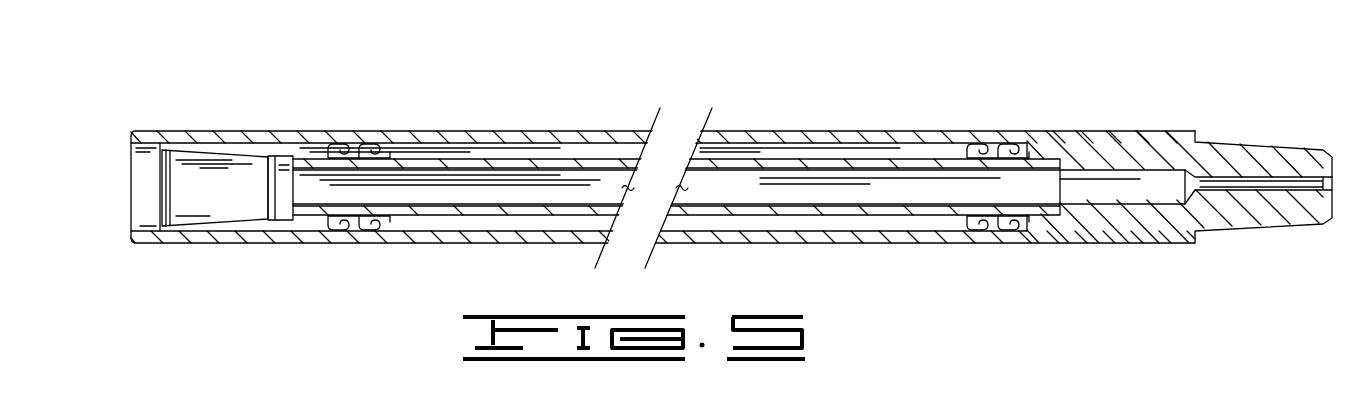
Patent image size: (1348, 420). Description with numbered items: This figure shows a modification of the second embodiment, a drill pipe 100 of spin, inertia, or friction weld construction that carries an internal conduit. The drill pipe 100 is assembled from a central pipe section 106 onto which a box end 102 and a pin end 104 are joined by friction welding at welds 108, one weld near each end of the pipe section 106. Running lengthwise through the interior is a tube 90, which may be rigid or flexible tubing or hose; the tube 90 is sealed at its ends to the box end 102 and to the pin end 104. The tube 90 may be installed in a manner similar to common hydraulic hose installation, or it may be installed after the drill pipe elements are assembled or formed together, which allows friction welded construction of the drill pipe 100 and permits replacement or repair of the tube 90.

The drill pipe 100 is at (820, 97).
The tube 90 is at (575, 134).
The box end 102 is at (215, 130).
The pin end 104 is at (1148, 125).
The pipe section 106 is at (748, 128).
The welds 108 is at (362, 132).